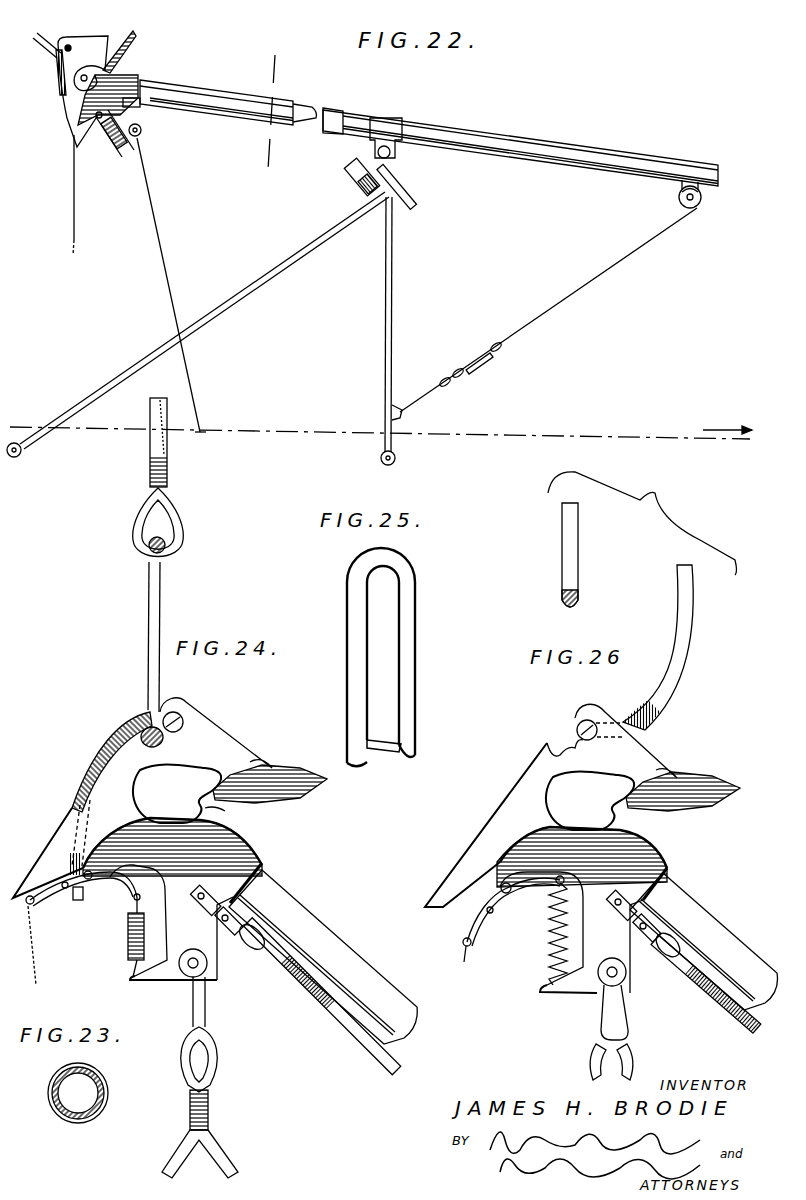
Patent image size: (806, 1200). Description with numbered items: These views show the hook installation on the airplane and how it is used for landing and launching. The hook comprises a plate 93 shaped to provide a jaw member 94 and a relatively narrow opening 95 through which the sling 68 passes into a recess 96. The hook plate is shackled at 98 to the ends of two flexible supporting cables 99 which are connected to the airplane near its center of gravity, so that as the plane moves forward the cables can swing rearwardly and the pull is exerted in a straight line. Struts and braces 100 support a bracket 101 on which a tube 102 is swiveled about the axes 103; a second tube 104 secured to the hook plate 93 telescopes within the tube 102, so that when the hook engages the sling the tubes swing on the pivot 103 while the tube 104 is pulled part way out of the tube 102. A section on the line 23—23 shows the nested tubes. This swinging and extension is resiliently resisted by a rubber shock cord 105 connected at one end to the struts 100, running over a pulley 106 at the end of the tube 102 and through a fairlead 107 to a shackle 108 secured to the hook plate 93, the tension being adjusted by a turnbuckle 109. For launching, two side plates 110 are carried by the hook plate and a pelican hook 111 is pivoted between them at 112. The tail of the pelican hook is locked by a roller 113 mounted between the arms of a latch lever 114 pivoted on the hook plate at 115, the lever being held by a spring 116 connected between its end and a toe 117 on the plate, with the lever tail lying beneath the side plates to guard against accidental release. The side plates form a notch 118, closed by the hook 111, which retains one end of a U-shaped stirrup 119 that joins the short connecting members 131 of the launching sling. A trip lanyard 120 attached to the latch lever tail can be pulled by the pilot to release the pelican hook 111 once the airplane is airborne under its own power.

In FIG. 22, the section line 23— 23 is at (266, 112).
In FIG. 22, the sling 68 is at (51, 37).
In FIG. 22, the hook plate 93 is at (132, 82).
In FIG. 24, the hook plate 93 is at (247, 866).
In FIG. 26, the hook plate 93 is at (660, 866).
In FIG. 22, the jaw member 94 is at (134, 44).
In FIG. 24, the jaw member 94 is at (290, 772).
In FIG. 26, the jaw member 94 is at (712, 784).
In FIG. 24, the narrow opening 95 is at (205, 809).
In FIG. 24, the recess 96 is at (187, 787).
In FIG. 26, the recess 96 is at (600, 795).
In FIG. 22, the shackle 98 is at (142, 136).
In FIG. 24, the shackle 98 is at (210, 1010).
In FIG. 26, the shackle 98 is at (601, 1012).
In FIG. 22, the flexible supporting cables 99 is at (157, 210).
In FIG. 24, the flexible supporting cables 99 is at (216, 1154).
In FIG. 22, the struts and braces 100 is at (240, 302).
In FIG. 22, the bracket 101 is at (408, 203).
In FIG. 22, the tube 102 is at (556, 141).
In FIG. 23, the tube 102 is at (100, 1092).
In FIG. 22, the axes (pivot) 103 is at (391, 153).
In FIG. 22, the second tube 104 is at (196, 96).
In FIG. 23, the second tube 104 is at (52, 1102).
In FIG. 24, the second tube 104 is at (340, 917).
In FIG. 26, the second tube 104 is at (712, 912).
In FIG. 22, the rubber shock cord 105 is at (582, 292).
In FIG. 24, the rubber shock cord 105 is at (358, 1043).
In FIG. 26, the rubber shock cord 105 is at (720, 1010).
In FIG. 22, the pulley 106 is at (703, 197).
In FIG. 22, the fairlead 107 is at (370, 140).
In FIG. 22, the shackle 108 is at (141, 108).
In FIG. 24, the shackle 108 is at (250, 960).
In FIG. 26, the shackle 108 is at (666, 966).
In FIG. 22, the turnbuckle 109 is at (480, 362).
In FIG. 22, the side plates 110 is at (65, 122).
In FIG. 24, the side plates 110 is at (60, 833).
In FIG. 26, the side plates 110 is at (468, 850).
In FIG. 22, the pelican hook 111 is at (55, 66).
In FIG. 24, the pelican hook 111 is at (118, 722).
In FIG. 26, the pelican hook 111 is at (680, 700).
In FIG. 24, the pivot 112 is at (183, 714).
In FIG. 26, the pivot 112 is at (592, 720).
In FIG. 24, the roller 113 is at (60, 904).
In FIG. 26, the roller 113 is at (495, 912).
In FIG. 22, the latch lever 114 is at (106, 152).
In FIG. 24, the latch lever 114 is at (115, 878).
In FIG. 26, the latch lever 114 is at (542, 883).
In FIG. 24, the latch lever pivot 115 is at (88, 890).
In FIG. 26, the latch lever pivot 115 is at (500, 891).
In FIG. 24, the spring 116 is at (128, 934).
In FIG. 26, the spring 116 is at (547, 958).
In FIG. 24, the toe 117 is at (165, 981).
In FIG. 26, the toe 117 is at (569, 994).
In FIG. 26, the notch 118 is at (567, 745).
In FIG. 24, the U-shaped stirrup 119 is at (149, 630).
In FIG. 25, the U-shaped stirrup 119 is at (408, 667).
In FIG. 26, the U-shaped stirrup 119 is at (576, 576).
In FIG. 22, the trip lanyard 120 is at (73, 200).
In FIG. 24, the trip lanyard 120 is at (38, 960).
In FIG. 26, the trip lanyard 120 is at (455, 960).
In FIG. 24, the connecting members 131 is at (150, 452).